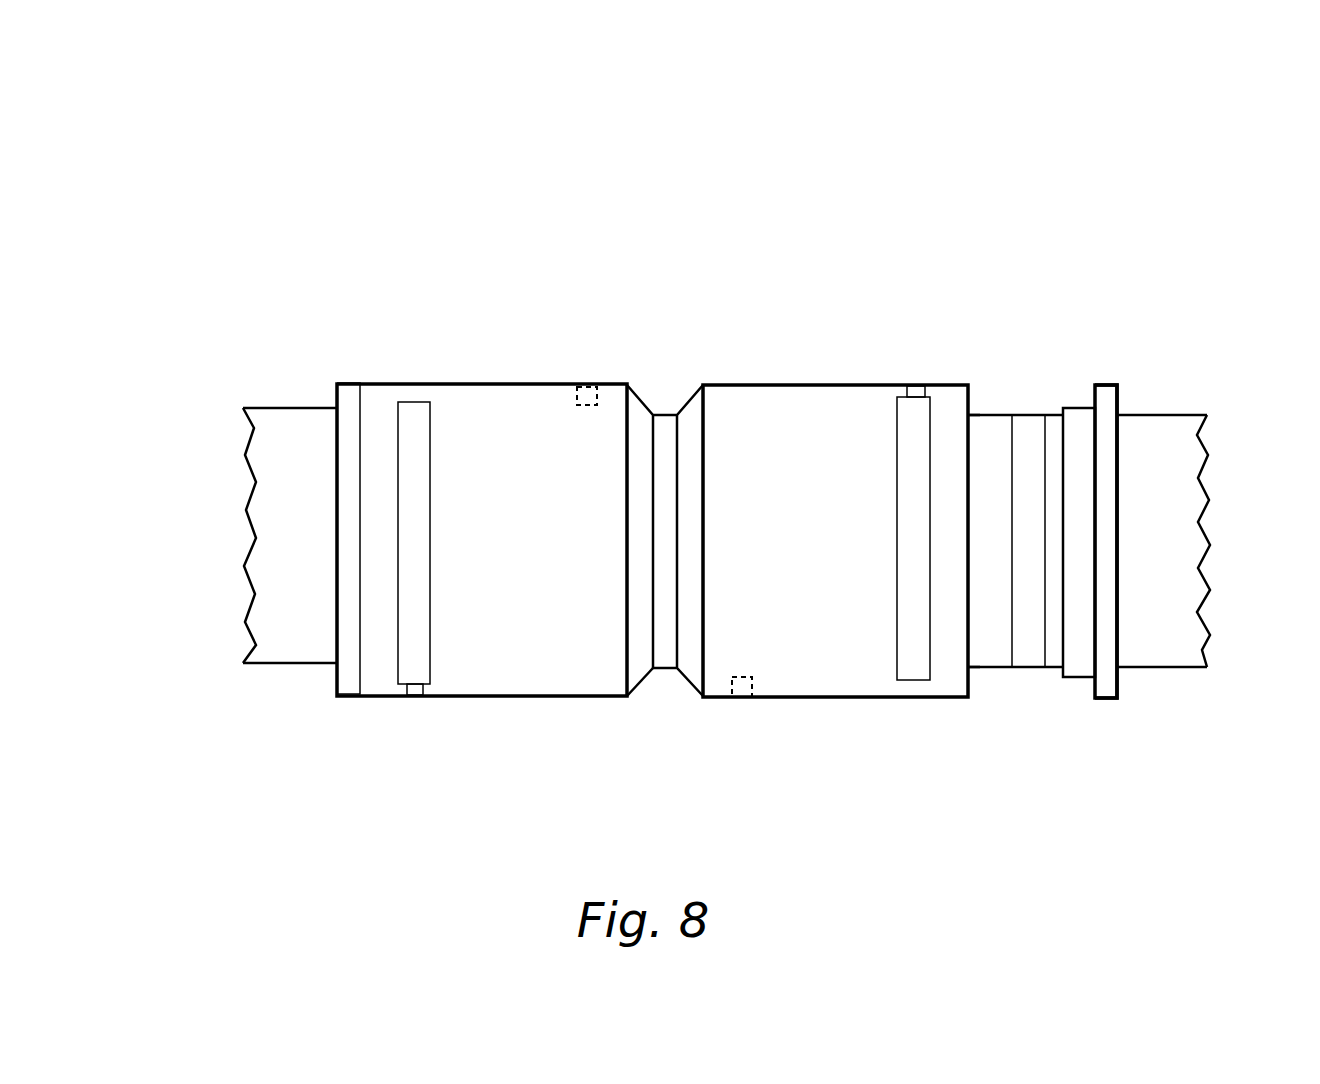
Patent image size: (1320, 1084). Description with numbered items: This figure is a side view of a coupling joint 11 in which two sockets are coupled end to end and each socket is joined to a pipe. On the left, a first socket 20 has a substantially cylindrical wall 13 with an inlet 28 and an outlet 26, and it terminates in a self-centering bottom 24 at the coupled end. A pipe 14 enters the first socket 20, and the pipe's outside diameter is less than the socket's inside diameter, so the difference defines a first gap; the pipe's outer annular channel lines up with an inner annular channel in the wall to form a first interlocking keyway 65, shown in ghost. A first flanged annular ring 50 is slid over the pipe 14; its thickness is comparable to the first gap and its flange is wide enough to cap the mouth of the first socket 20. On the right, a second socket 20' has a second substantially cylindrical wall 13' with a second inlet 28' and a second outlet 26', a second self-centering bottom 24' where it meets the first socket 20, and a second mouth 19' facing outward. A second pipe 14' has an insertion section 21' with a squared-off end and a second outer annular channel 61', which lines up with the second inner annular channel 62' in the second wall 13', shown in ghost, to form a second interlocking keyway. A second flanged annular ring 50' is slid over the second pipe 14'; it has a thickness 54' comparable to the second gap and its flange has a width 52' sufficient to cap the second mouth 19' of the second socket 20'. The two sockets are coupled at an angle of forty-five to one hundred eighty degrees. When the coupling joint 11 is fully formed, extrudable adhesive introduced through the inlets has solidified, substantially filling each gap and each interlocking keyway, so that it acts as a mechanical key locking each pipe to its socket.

The coupling joint 11 is at (930, 273).
The substantially cylindrical wall 13 is at (410, 493).
The second substantially cylindrical wall 13' is at (978, 536).
The pipe 14 is at (290, 535).
The second pipe 14' is at (1163, 541).
The second mouth 19' is at (1063, 476).
The first socket 20 is at (482, 540).
The second socket 20' is at (835, 541).
The insertion section 21' is at (1015, 541).
The self-centering bottom 24 is at (572, 705).
The second self-centering bottom 24' is at (665, 415).
The outlet 26 is at (525, 366).
The second outlet 26' is at (777, 732).
The inlet 28 is at (351, 719).
The second inlet 28' is at (977, 361).
The first flanged annular ring 50 is at (264, 551).
The second flanged annular ring 50' is at (1174, 530).
The width 52' is at (1163, 569).
The thickness 54' is at (1041, 616).
The second outer annular channel 61' is at (993, 600).
The second inner annular channel 62' is at (873, 615).
The first interlocking keyway 65 is at (400, 468).